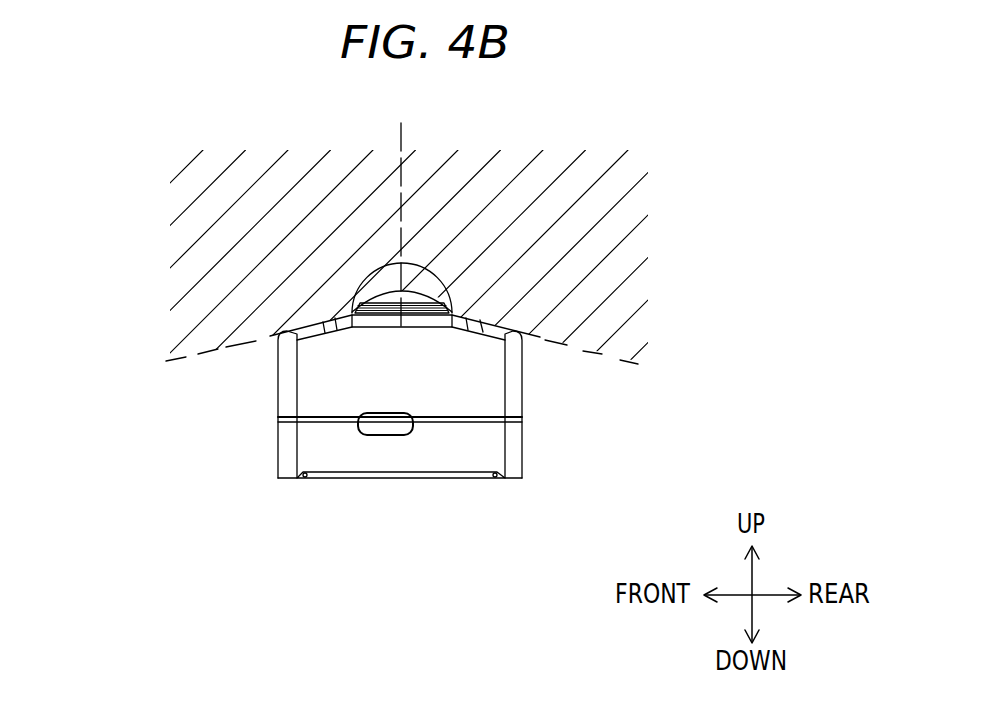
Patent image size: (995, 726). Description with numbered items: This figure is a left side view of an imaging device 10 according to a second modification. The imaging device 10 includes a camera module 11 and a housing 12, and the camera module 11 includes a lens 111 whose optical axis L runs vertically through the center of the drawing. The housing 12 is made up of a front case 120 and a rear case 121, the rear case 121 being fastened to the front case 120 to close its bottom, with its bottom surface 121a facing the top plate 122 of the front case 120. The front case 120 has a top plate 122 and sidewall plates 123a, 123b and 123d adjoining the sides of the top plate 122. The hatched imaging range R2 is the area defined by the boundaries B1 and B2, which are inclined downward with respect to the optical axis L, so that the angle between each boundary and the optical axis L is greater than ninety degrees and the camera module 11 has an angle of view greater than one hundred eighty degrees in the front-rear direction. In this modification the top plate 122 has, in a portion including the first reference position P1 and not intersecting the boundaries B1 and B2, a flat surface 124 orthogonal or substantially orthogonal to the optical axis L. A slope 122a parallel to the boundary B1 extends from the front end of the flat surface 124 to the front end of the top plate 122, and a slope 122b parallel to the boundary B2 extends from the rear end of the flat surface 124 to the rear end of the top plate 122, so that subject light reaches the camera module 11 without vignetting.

The imaging device 10 is at (150, 585).
The camera module 11 is at (402, 288).
The housing 12 is at (239, 632).
The lens 111 is at (375, 302).
The front case 120 is at (277, 410).
The rear case 121 is at (522, 425).
The bottom surface 121a is at (513, 478).
The top plate 122 is at (312, 478).
The slope 122a is at (277, 453).
The slope 122b is at (480, 322).
The sidewall plate 123a is at (335, 320).
The sidewall plate 123b is at (487, 402).
The sidewall plate 123d is at (488, 437).
The flat surface 124 is at (402, 315).
The boundary B1 is at (287, 380).
The boundary B2 is at (565, 345).
The first reference position P1 is at (417, 315).
The optical axis L is at (401, 140).
The imaging range R2 is at (627, 227).